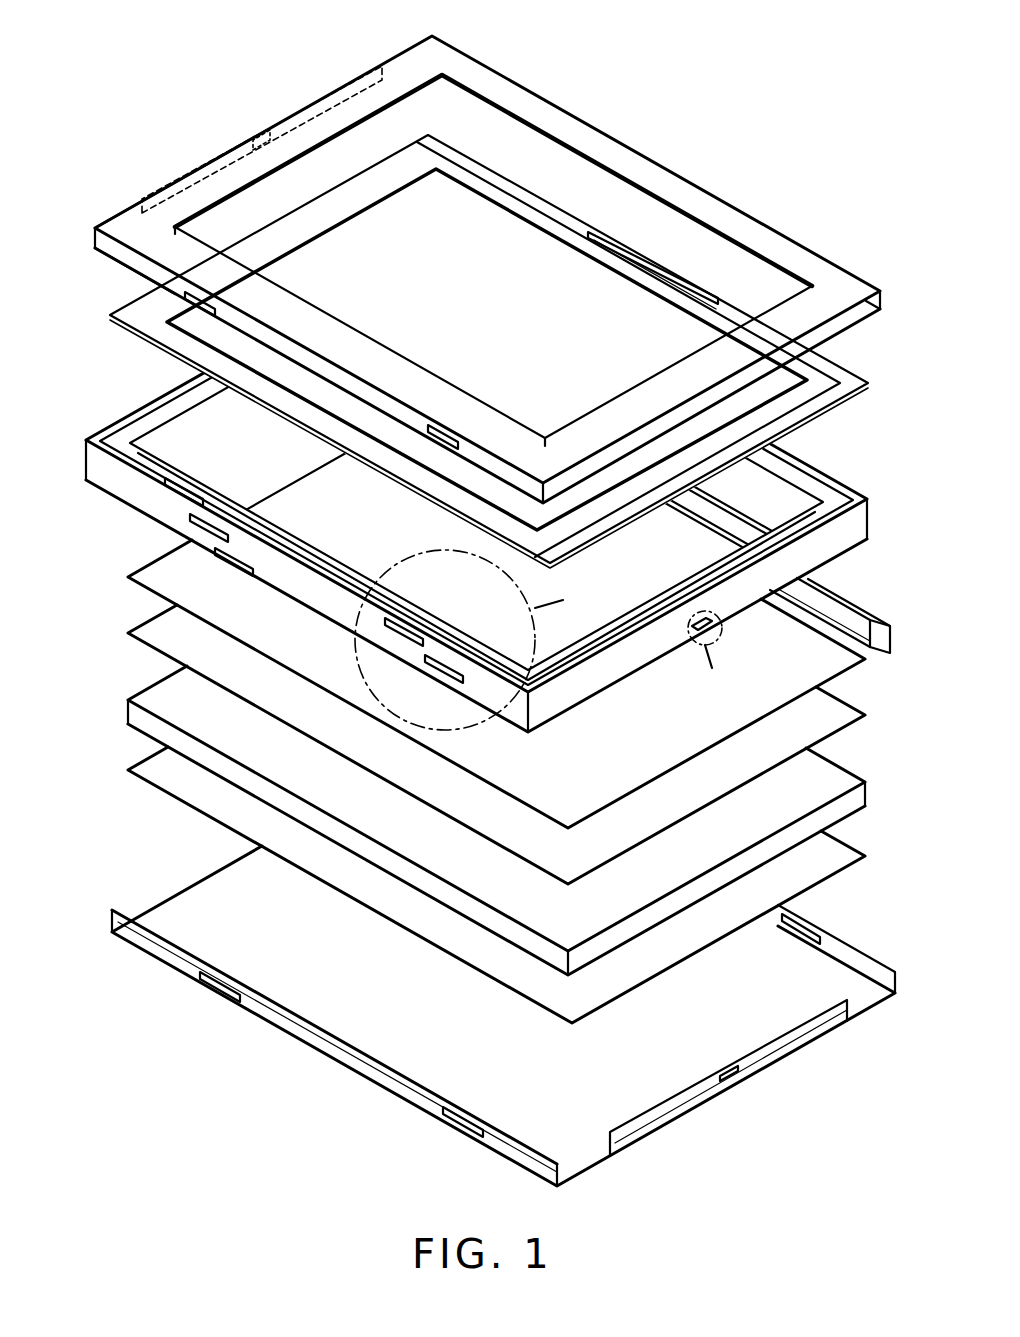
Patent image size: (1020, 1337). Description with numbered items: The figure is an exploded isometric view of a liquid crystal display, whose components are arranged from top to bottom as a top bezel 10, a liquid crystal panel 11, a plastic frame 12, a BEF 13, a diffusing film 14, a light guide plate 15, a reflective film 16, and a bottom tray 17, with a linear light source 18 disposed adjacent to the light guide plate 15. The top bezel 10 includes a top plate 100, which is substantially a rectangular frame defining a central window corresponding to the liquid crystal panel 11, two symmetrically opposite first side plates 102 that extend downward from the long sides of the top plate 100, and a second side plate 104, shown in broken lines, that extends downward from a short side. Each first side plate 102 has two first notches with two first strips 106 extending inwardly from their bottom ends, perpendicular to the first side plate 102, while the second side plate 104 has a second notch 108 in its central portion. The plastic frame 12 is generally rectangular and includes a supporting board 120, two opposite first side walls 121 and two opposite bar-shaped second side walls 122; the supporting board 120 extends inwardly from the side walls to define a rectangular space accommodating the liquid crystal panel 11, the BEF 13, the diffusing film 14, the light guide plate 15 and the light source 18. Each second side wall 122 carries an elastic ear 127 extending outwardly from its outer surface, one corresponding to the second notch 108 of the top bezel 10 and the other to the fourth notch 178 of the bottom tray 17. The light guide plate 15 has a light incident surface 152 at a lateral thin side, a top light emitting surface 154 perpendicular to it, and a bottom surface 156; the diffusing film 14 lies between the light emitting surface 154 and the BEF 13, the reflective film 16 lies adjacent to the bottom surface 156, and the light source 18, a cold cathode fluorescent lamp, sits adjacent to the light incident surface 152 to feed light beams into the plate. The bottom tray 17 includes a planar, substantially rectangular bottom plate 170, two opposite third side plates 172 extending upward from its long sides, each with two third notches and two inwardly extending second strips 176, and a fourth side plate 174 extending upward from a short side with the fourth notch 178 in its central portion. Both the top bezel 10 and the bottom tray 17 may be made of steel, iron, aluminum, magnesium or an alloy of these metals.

The top bezel 10 is at (715, 148).
The top plate 100 is at (540, 108).
The first side plate 102 is at (125, 260).
The second side plate 104 is at (178, 192).
The first strip 106 is at (190, 300).
The second notch 108 is at (262, 145).
The liquid crystal panel 11 is at (815, 383).
The plastic frame 12 is at (810, 454).
The supporting board 120 is at (810, 490).
The first side wall 121 is at (130, 480).
The second side wall 122 is at (152, 390).
The elastic ear 127 is at (708, 634).
The BEF 13 is at (790, 638).
The linear light source 18 is at (820, 590).
The diffusing film 14 is at (815, 720).
The light guide plate 15 is at (155, 665).
The light incident surface 152 is at (868, 795).
The light emitting surface 154 is at (825, 775).
The bottom surface 156 is at (772, 866).
The reflective film 16 is at (835, 855).
The bottom tray 17 is at (780, 1089).
The bottom plate 170 is at (650, 1088).
The third side plate 172 is at (425, 1095).
The fourth side plate 174 is at (810, 1035).
The second strip 176 is at (815, 925).
The fourth notch 178 is at (730, 1085).